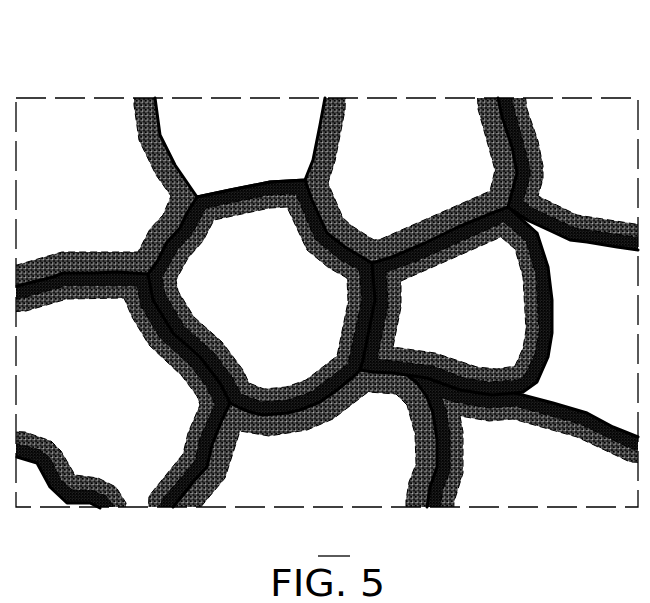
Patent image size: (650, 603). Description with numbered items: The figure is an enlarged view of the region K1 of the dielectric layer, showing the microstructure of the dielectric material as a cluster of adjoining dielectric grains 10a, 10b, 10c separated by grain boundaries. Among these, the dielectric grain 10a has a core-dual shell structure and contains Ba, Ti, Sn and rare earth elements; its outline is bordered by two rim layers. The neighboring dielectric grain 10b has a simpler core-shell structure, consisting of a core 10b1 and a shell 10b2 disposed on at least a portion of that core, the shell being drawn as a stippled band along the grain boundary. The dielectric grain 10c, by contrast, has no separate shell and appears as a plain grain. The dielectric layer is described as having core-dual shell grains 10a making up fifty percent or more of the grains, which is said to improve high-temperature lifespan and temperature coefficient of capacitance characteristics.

The dielectric grain having a core-dual shell structure 10a is at (267, 238).
The dielectric grain having a core-shell structure 10b is at (525, 38).
The core 10b1 is at (408, 113).
The shell 10b2 is at (492, 107).
The dielectric grain without a separate shell 10c is at (190, 112).
The region K1 is at (334, 545).